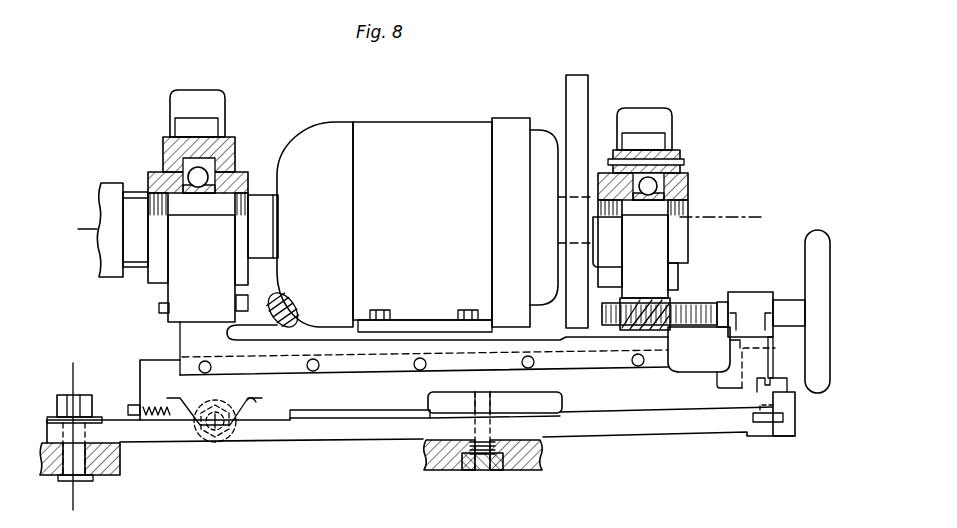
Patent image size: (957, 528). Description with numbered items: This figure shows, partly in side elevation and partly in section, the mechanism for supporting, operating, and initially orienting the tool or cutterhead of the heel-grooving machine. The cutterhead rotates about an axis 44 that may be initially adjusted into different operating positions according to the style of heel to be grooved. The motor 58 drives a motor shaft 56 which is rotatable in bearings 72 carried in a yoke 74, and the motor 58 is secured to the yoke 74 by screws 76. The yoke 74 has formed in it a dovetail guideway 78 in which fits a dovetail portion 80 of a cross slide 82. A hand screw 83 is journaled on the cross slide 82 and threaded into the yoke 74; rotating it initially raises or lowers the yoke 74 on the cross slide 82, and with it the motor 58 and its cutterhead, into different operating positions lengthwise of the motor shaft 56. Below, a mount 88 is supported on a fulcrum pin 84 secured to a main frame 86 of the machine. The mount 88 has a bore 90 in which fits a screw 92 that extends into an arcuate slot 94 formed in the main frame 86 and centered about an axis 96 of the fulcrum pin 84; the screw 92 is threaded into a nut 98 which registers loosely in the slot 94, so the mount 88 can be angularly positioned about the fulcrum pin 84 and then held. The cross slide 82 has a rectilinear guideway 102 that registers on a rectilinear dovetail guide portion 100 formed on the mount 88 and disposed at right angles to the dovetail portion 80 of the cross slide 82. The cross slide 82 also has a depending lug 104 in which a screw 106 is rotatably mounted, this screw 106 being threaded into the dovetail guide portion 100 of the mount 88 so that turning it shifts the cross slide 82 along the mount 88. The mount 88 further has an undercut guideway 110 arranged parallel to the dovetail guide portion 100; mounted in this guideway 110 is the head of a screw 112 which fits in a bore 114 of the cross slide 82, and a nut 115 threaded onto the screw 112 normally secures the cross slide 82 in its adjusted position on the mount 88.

The axis 44 is at (752, 216).
The motor shaft 56 is at (592, 197).
The motor 58 is at (415, 128).
The bearings 72 is at (232, 159).
The yoke 74 is at (313, 337).
The screws 76 is at (468, 311).
The dovetail guideway 78 is at (182, 358).
The dovetail portion 80 is at (140, 364).
The cross slide 82 is at (398, 398).
The hand screw 83 is at (706, 303).
The fulcrum pin 84 is at (82, 468).
The main frame 86 is at (121, 456).
The mount 88 is at (339, 428).
The bore 90 is at (478, 426).
The screw 92 is at (497, 405).
The arcuate slot 94 is at (484, 456).
The axis 96 is at (73, 372).
The nut 98 is at (470, 472).
The dovetail guide portion 100 is at (262, 410).
The rectilinear guideway 102 is at (256, 405).
The depending lug 104 is at (238, 440).
The screw 106 is at (212, 440).
The undercut guideway 110 is at (778, 424).
The screw 112 is at (796, 400).
The bore 114 is at (757, 409).
The nut 115 is at (776, 380).